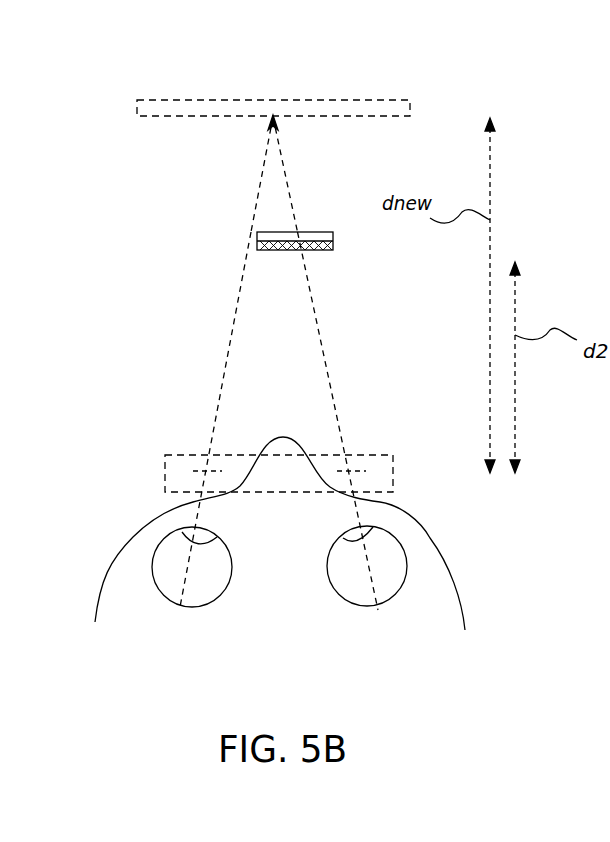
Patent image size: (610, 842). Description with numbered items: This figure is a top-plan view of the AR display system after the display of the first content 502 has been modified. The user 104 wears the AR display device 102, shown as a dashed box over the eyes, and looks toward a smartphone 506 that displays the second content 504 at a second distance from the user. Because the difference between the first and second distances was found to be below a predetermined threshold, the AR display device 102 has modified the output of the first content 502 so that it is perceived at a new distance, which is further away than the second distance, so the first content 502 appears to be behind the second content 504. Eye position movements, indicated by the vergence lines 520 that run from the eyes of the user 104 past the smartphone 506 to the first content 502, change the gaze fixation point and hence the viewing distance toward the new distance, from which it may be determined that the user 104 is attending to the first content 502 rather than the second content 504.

The AR display device 102 is at (165, 462).
The user 104 is at (300, 642).
The first content 502 is at (160, 100).
The second content 504 is at (318, 250).
The smartphone 506 is at (262, 224).
The vergence lines 520 is at (318, 340).